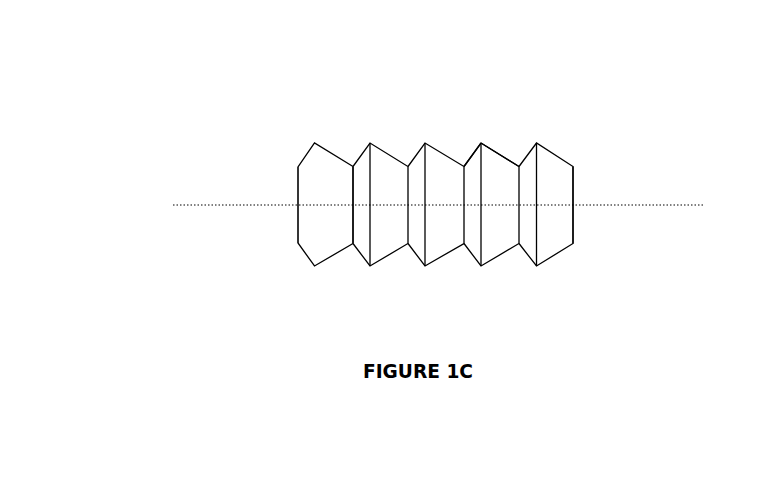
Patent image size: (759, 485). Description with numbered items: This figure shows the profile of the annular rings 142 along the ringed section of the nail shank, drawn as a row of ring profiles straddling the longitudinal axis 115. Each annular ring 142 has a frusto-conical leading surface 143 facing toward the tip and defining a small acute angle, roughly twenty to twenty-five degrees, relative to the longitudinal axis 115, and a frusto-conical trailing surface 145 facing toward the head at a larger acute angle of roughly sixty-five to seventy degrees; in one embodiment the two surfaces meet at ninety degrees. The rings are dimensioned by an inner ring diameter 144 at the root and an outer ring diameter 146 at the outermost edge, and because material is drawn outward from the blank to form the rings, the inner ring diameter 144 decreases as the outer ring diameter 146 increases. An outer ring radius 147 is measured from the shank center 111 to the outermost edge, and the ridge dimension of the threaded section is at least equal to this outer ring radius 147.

The shank center 111 is at (537, 205).
The longitudinal axis 115 is at (664, 200).
The annular ring 142 is at (567, 130).
The leading surface 143 is at (500, 152).
The inner ring diameter 144 is at (353, 288).
The trailing surface 145 is at (472, 155).
The outer ring diameter 146 is at (314, 307).
The outer ring radius 147 is at (536, 205).